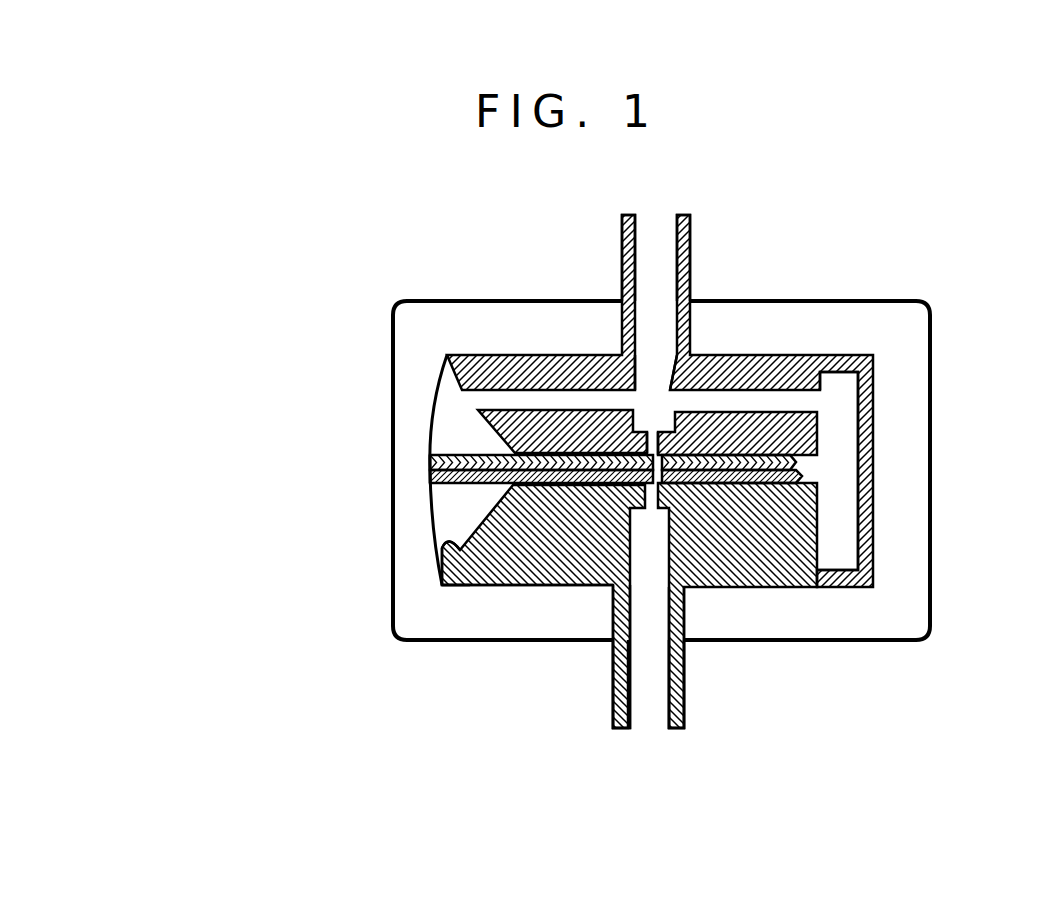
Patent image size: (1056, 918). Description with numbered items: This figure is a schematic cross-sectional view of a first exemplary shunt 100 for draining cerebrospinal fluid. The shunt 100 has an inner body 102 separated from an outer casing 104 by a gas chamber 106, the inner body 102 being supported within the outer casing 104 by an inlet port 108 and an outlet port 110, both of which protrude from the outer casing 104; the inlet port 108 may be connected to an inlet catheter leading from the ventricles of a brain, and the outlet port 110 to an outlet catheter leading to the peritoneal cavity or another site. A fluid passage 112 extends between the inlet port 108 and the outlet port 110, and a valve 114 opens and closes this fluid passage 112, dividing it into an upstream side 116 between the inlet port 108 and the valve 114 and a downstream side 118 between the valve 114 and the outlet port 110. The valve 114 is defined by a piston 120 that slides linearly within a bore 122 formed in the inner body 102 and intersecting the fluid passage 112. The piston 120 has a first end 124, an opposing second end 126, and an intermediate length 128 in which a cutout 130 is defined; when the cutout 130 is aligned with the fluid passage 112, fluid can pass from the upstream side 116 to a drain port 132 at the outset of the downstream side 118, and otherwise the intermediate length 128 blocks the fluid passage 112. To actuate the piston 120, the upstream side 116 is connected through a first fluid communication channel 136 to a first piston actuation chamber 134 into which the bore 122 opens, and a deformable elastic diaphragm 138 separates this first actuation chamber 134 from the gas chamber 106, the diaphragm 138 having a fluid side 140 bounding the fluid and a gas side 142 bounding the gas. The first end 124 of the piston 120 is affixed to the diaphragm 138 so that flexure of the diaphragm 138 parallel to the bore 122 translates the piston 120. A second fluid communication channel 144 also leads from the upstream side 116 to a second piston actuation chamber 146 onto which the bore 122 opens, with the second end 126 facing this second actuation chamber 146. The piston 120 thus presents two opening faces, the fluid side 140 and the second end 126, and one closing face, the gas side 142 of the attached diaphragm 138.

The shunt 100 is at (337, 304).
The inner body 102 is at (460, 352).
The outer casing 104 is at (393, 306).
The gas chamber 106 is at (420, 348).
The inlet port 108 is at (662, 222).
The outlet port 110 is at (659, 718).
The fluid passage 112 is at (657, 390).
The valve 114 is at (615, 492).
The upstream side 116 is at (660, 408).
The downstream side 118 is at (640, 502).
The piston 120 is at (755, 495).
The bore 122 is at (797, 478).
The first end 124 is at (432, 476).
The second end 126 is at (792, 468).
The intermediate length 128 is at (480, 490).
The cutout 130 is at (647, 443).
The drain port 132 is at (683, 490).
The first piston actuation chamber 134 is at (445, 422).
The first fluid communication channel 136 is at (530, 403).
The deformable elastic diaphragm 138 is at (423, 558).
The fluid side 140 is at (440, 583).
The gas side 142 is at (443, 583).
The second fluid communication channel 144 is at (770, 400).
The second piston actuation chamber 146 is at (847, 408).